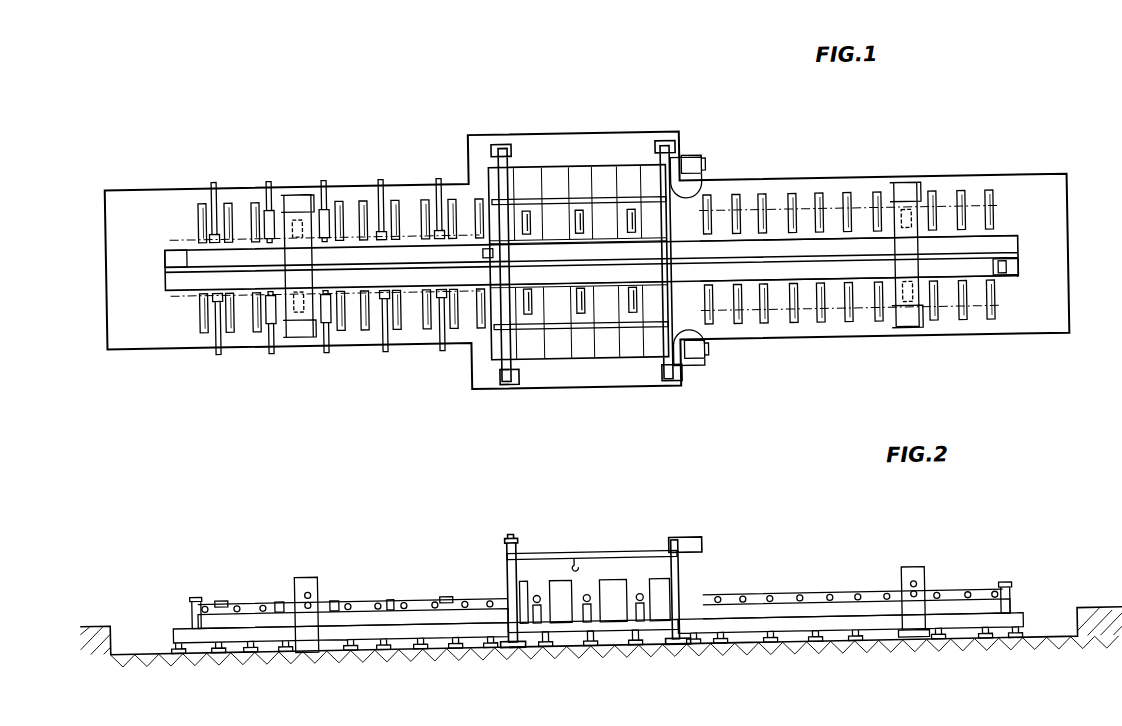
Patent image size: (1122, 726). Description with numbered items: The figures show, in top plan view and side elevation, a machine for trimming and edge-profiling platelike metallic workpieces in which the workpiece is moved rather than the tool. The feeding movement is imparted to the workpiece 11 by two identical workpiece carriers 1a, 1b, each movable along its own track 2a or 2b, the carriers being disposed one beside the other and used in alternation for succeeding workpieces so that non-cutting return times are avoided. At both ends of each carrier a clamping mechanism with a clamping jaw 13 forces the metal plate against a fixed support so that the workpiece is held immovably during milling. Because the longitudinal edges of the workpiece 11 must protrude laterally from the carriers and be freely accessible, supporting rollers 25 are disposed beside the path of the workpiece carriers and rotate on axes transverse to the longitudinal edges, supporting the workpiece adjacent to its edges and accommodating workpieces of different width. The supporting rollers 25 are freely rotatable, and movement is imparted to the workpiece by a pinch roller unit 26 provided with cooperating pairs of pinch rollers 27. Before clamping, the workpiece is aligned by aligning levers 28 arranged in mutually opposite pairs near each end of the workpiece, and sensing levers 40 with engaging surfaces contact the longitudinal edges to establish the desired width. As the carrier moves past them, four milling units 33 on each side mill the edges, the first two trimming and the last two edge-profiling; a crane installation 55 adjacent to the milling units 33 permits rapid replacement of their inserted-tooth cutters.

In FIG. 1, the workpiece carrier 1a is at (940, 276).
In FIG. 2, the workpiece carrier 1a is at (790, 604).
In FIG. 1, the workpiece carrier 1b is at (210, 253).
In FIG. 2, the workpiece carrier 1b is at (255, 607).
In FIG. 1, the track 2a is at (1010, 290).
In FIG. 2, the track 2a is at (185, 625).
In FIG. 1, the track 2b is at (1005, 244).
In FIG. 1, the workpiece 11 is at (1024, 142).
In FIG. 1, the clamping jaw 13 is at (128, 137).
In FIG. 2, the clamping jaw 13 is at (195, 592).
In FIG. 1, the supporting rollers 25 is at (363, 213).
In FIG. 2, the supporting rollers 25 is at (405, 600).
In FIG. 1, the pinch roller unit 26 is at (905, 263).
In FIG. 2, the pinch roller unit 26 is at (310, 625).
In FIG. 1, the pinch rollers 27 is at (297, 215).
In FIG. 2, the pinch rollers 27 is at (318, 600).
In FIG. 1, the aligning levers 28 is at (212, 213).
In FIG. 2, the aligning levers 28 is at (222, 594).
In FIG. 1, the milling units 33 is at (503, 165).
In FIG. 2, the milling units 33 is at (525, 589).
In FIG. 1, the sensing lever 40 is at (267, 211).
In FIG. 2, the sensing lever 40 is at (280, 596).
In FIG. 1, the crane installation 55 is at (505, 330).
In FIG. 2, the crane installation 55 is at (555, 552).